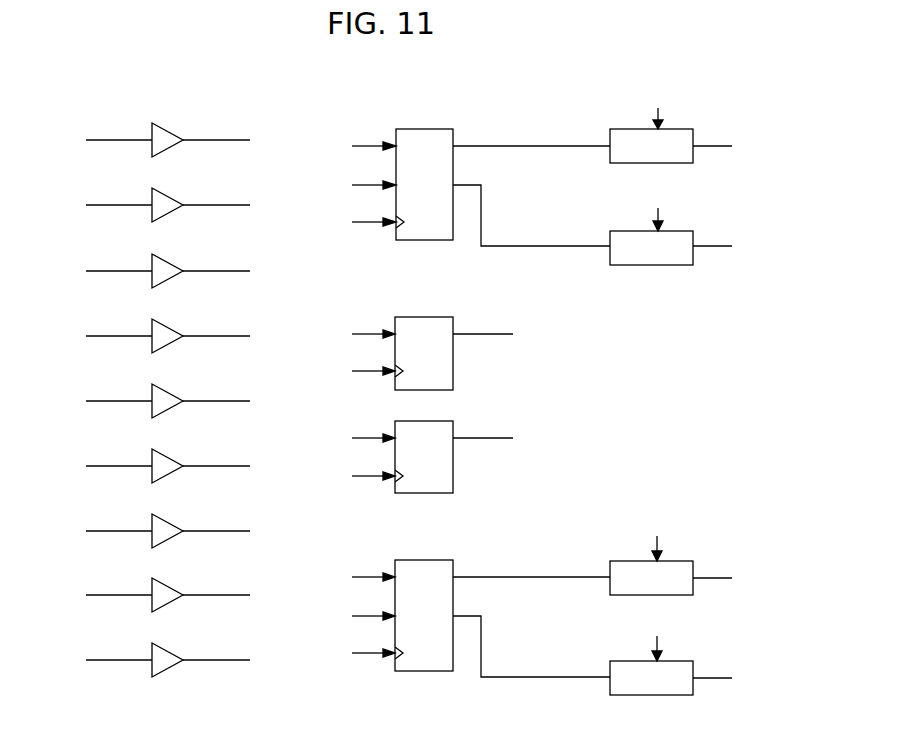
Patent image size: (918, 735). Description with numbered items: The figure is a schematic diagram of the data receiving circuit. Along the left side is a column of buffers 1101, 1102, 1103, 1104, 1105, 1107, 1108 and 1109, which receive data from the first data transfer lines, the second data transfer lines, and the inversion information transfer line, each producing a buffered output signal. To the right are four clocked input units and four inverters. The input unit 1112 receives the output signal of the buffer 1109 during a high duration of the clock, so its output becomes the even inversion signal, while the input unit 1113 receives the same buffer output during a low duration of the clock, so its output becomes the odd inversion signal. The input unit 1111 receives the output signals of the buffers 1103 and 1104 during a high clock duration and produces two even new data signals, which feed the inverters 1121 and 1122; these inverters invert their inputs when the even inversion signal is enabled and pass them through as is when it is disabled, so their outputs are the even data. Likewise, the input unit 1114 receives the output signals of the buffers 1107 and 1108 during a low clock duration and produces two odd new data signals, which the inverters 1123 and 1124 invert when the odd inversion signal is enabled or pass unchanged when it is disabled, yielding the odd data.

The buffer 1101 is at (170, 129).
The buffer 1102 is at (170, 194).
The buffer 1103 is at (170, 260).
The buffer 1104 is at (170, 325).
The buffer 1105 is at (170, 455).
The buffer 1107 is at (170, 584).
The buffer 1108 is at (170, 649).
The buffer 1109 is at (170, 390).
The input unit 1111 is at (428, 129).
The input unit 1112 is at (428, 317).
The input unit 1113 is at (428, 421).
The input unit 1114 is at (428, 560).
The inverter 1121 is at (671, 129).
The inverter 1122 is at (671, 231).
The inverter 1123 is at (671, 561).
The inverter 1124 is at (671, 661).